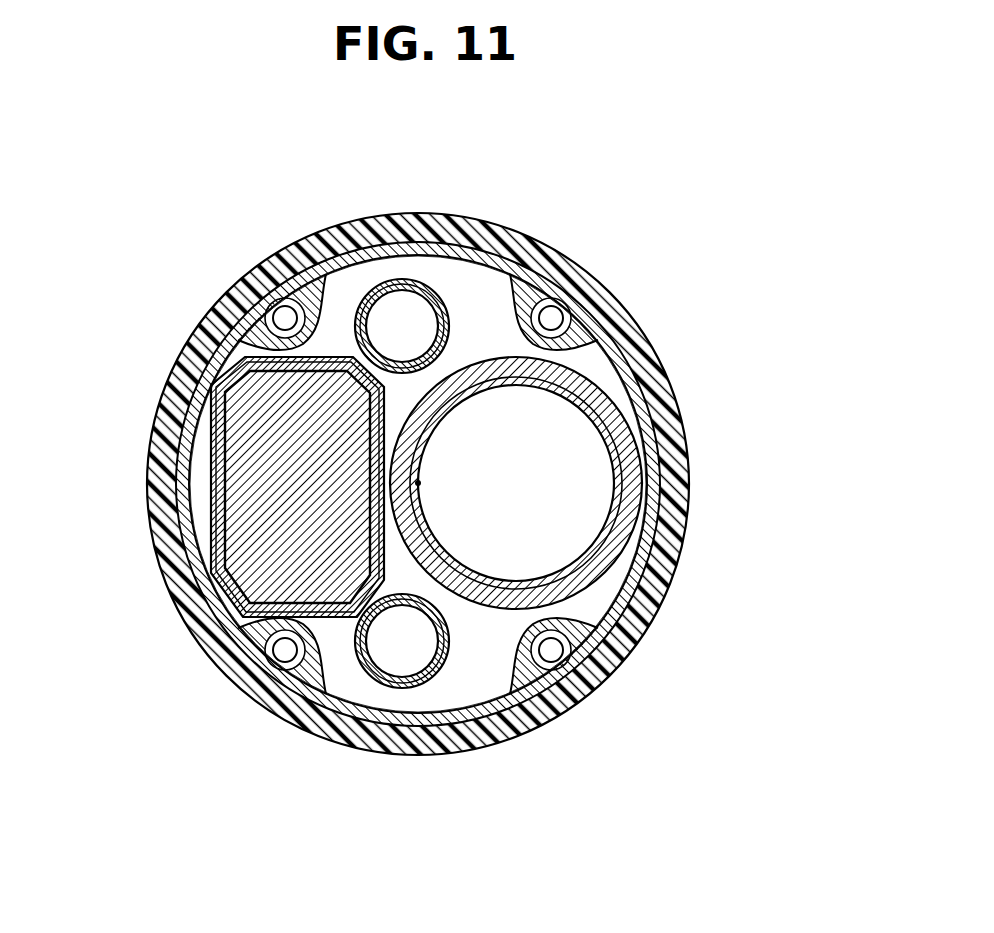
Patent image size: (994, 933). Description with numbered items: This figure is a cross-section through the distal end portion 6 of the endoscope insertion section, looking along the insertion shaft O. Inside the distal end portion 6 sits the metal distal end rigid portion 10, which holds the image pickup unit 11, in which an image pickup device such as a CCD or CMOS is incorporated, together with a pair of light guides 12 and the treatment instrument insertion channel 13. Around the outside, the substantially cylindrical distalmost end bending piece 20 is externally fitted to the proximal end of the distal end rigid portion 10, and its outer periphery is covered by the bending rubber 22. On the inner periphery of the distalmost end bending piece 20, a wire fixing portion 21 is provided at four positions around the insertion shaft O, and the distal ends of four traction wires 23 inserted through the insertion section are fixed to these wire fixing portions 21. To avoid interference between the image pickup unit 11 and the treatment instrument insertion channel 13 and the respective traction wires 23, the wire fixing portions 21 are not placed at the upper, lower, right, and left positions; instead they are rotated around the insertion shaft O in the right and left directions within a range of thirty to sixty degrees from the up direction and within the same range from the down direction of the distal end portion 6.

The distal end portion 6 is at (706, 207).
The distal end rigid portion 10 is at (603, 380).
The image pickup unit 11 is at (240, 545).
The light guide 12 is at (397, 279).
The treatment instrument insertion channel 13 is at (637, 442).
The distalmost end bending piece 20 is at (655, 492).
The wire fixing portion 21 is at (252, 342).
The bending rubber 22 is at (670, 571).
The traction wire 23 is at (283, 318).
The insertion shaft O is at (420, 482).